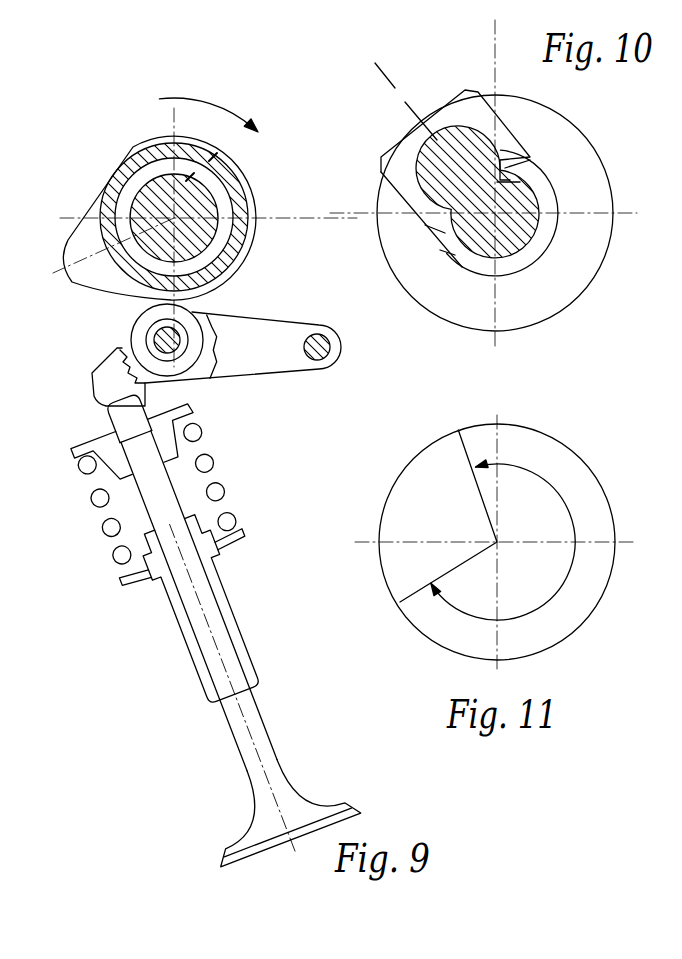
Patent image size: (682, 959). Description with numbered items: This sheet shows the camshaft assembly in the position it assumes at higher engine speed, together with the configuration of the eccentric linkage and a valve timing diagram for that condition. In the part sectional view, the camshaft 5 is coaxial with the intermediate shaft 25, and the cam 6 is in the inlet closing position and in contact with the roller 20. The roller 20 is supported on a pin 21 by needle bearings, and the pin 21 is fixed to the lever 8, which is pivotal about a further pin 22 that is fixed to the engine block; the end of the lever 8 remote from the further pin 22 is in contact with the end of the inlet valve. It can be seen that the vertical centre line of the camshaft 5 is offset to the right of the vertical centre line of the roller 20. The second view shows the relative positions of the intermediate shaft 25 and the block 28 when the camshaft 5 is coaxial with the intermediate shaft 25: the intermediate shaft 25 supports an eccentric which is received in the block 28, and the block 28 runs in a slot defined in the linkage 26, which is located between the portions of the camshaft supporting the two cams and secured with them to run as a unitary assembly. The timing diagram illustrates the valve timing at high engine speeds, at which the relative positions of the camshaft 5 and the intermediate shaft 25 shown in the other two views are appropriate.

In FIG. 9, the camshaft 5 is at (153, 153).
In FIG. 9, the cam 6 is at (84, 233).
In FIG. 9, the intermediate shaft 25 is at (157, 193).
In FIG. 10, the intermediate shaft 25 is at (483, 250).
In FIG. 9, the roller 20 is at (137, 333).
In FIG. 9, the pin 21 is at (177, 352).
In FIG. 9, the lever 8 is at (255, 362).
In FIG. 9, the further pin 22 is at (325, 360).
In FIG. 10, the linkage 26 is at (395, 267).
In FIG. 10, the block 28 is at (460, 105).